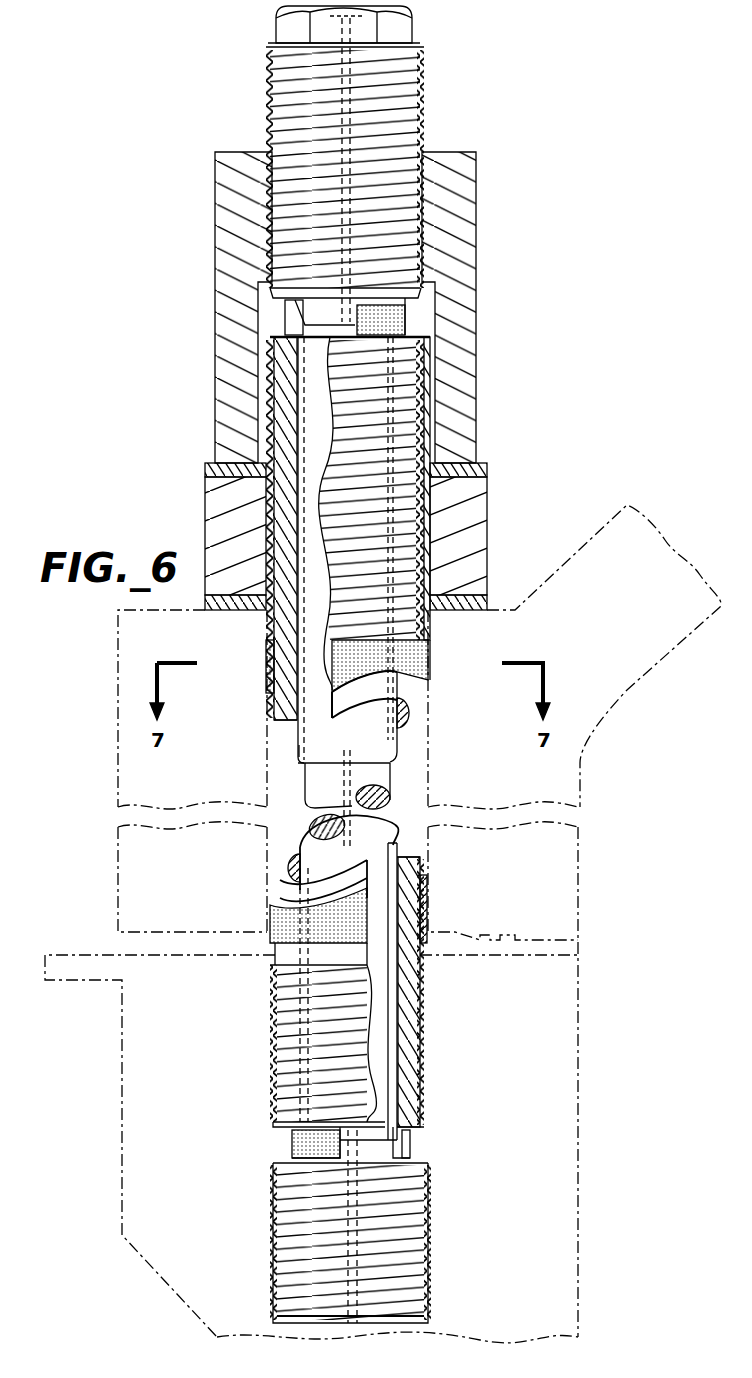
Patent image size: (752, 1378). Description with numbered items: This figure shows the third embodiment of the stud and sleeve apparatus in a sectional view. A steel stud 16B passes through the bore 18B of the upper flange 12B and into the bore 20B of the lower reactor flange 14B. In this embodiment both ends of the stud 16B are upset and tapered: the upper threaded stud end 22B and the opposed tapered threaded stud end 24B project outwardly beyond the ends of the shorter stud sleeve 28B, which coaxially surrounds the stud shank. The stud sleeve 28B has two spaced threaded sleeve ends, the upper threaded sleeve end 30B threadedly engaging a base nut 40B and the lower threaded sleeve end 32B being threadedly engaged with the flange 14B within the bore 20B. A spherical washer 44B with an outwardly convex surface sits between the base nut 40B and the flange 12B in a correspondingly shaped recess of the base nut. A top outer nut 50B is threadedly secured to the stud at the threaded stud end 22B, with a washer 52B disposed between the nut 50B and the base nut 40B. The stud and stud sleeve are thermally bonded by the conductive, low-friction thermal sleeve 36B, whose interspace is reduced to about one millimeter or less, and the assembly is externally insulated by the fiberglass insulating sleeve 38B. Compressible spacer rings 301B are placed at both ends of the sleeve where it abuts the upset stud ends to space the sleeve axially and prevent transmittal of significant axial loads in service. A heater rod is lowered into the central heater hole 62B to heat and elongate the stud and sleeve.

The flange 12B is at (118, 674).
The flange 14B is at (122, 1075).
The stud 16B is at (405, 27).
The bore 18B is at (430, 858).
The bore 20B is at (420, 985).
The threaded stud end 22B is at (420, 52).
The threaded stud end 24B is at (428, 1240).
The stud sleeve 28B is at (277, 700).
The threaded sleeve end 30B is at (428, 345).
The threaded sleeve end 32B is at (273, 1008).
The thermal sleeve 36B is at (299, 745).
The insulating sleeve 38B is at (266, 648).
The base nut 40B is at (488, 512).
The washer 44B is at (470, 598).
The top outer nut 50B is at (445, 153).
The washer 52B is at (483, 468).
The heater hole 62B is at (405, 92).
The compressible spacer ring 301B is at (405, 307).